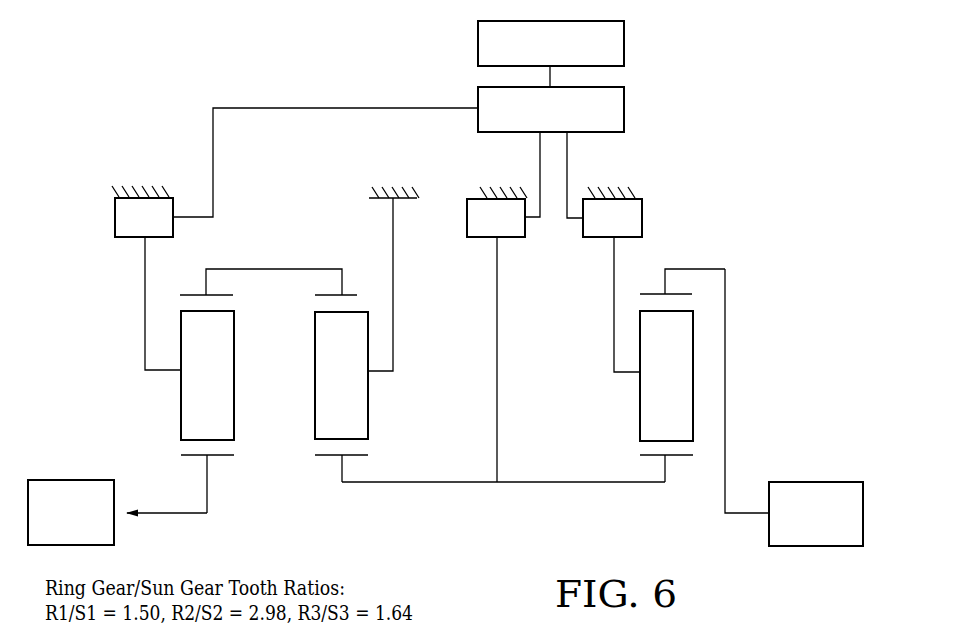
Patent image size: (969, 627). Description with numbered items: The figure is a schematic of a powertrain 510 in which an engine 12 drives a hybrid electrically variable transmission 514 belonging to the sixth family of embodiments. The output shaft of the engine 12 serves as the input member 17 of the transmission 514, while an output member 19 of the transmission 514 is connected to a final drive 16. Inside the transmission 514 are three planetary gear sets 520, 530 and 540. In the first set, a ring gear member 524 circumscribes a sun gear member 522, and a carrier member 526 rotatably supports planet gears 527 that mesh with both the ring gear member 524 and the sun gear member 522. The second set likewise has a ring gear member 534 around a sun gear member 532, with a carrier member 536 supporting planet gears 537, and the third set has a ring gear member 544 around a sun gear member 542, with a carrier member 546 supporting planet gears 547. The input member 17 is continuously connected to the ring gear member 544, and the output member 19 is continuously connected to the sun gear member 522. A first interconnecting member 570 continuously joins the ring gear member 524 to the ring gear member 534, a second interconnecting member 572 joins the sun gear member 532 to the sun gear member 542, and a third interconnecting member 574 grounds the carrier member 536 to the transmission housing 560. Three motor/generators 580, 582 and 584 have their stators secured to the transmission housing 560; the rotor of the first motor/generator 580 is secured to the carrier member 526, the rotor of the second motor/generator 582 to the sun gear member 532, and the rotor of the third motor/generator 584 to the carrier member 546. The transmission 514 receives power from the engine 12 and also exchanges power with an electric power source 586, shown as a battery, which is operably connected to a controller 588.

The engine 12 is at (802, 468).
The final drive 16 is at (96, 458).
The input member 17 is at (748, 514).
The output member 19 is at (135, 512).
The powertrain 510 is at (702, 111).
The electrically variable transmission 514 is at (740, 149).
The first planetary gear set 520 is at (221, 463).
The first sun gear member 522 is at (192, 456).
The first ring gear member 524 is at (220, 294).
The first carrier member 526 is at (169, 382).
The first planet gears 527 is at (207, 375).
The second planetary gear set 530 is at (353, 463).
The second sun gear member 532 is at (325, 456).
The second ring gear member 534 is at (329, 294).
The second carrier member 536 is at (379, 382).
The second planet gears 537 is at (341, 375).
The third planetary gear set 540 is at (678, 463).
The third sun gear member 542 is at (648, 456).
The third ring gear member 544 is at (676, 294).
The third carrier member 546 is at (631, 382).
The third planet gears 547 is at (666, 376).
The transmission housing 560 is at (146, 188).
The first interconnecting member 570 is at (283, 268).
The second interconnecting member 572 is at (585, 483).
The third interconnecting member 574 is at (395, 293).
The first motor/generator 580 is at (101, 204).
The second motor/generator 582 is at (454, 203).
The third motor/generator 584 is at (653, 205).
The electric power source 586 is at (478, 44).
The controller 588 is at (478, 97).